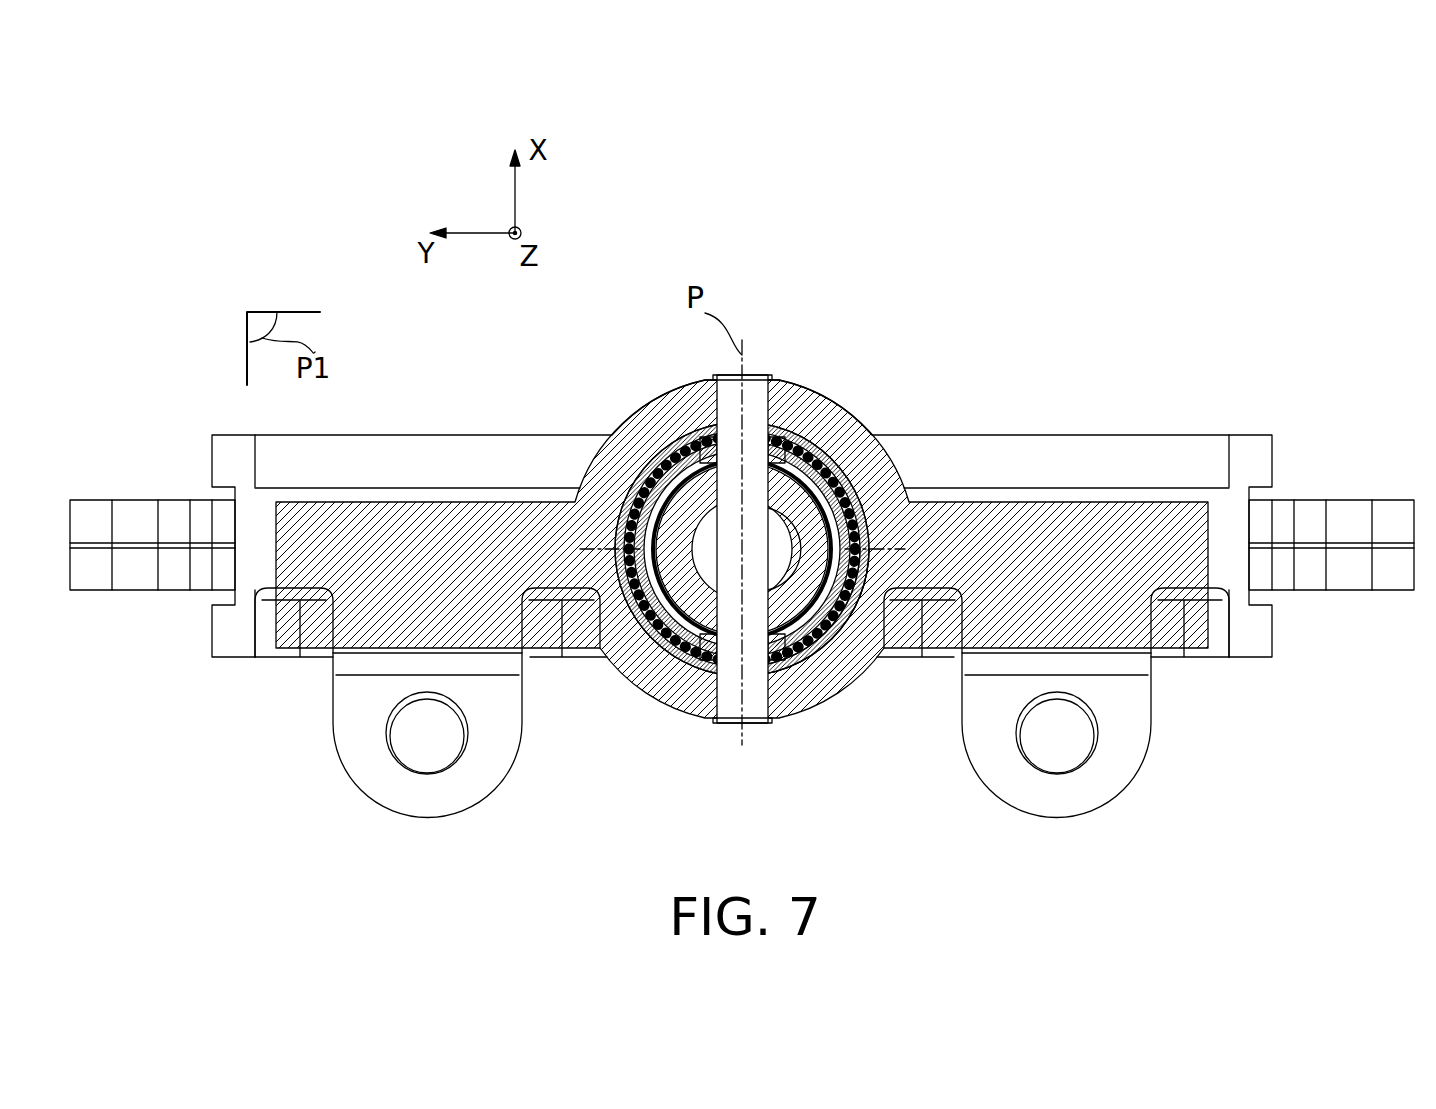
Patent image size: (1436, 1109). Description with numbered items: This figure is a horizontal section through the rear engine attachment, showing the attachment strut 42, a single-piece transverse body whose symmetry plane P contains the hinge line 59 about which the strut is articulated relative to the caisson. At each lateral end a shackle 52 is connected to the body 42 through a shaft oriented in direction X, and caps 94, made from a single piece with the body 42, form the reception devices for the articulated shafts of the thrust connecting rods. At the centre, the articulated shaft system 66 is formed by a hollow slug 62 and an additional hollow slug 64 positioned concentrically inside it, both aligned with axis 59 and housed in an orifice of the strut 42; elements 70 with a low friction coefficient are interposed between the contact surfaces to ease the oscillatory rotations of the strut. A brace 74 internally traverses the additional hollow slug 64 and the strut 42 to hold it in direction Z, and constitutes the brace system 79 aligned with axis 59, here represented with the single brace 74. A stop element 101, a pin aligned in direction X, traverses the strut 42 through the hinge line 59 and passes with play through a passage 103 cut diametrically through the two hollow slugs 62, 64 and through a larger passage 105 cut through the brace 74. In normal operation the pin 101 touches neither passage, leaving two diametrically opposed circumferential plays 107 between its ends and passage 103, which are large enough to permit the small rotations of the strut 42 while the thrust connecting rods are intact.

The attachment strut 42 is at (1118, 500).
The shackle 52 is at (138, 518).
The hinge line 59 is at (762, 525).
The hollow slug 62 is at (820, 647).
The additional hollow slug 64 is at (837, 637).
The articulated shaft system 66 is at (900, 708).
The low friction elements 70 is at (793, 660).
The brace 74 is at (784, 495).
The brace system 79 is at (812, 550).
The cap 94 is at (498, 738).
The stop element 101 is at (755, 390).
The passage 103 is at (700, 445).
The passage 105 is at (712, 497).
The circumferential play 107 is at (710, 425).